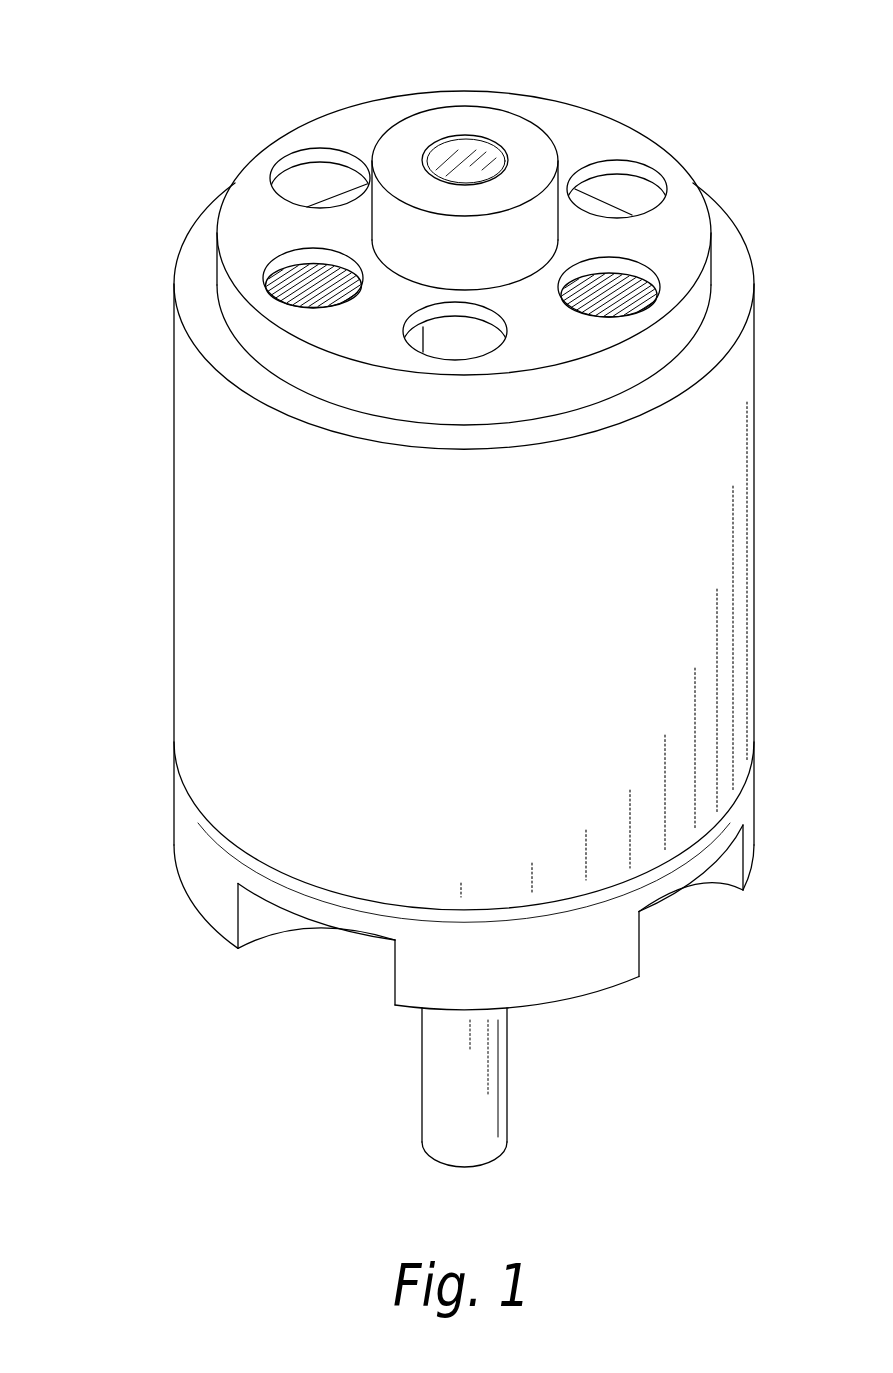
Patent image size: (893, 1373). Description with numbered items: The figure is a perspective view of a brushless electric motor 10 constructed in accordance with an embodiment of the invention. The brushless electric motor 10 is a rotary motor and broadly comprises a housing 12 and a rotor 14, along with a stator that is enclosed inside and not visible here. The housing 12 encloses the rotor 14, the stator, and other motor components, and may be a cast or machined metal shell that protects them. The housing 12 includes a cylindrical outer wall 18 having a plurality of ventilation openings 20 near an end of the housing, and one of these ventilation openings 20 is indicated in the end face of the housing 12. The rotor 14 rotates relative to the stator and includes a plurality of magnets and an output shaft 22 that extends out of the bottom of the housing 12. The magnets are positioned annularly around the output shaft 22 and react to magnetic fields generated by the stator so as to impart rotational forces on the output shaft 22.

The brushless electric motor 10 is at (85, 95).
The housing 12 is at (150, 245).
The rotor 14 is at (398, 1070).
The cylindrical outer wall 18 is at (232, 471).
The ventilation openings 20 is at (304, 152).
The output shaft 22 is at (482, 1120).